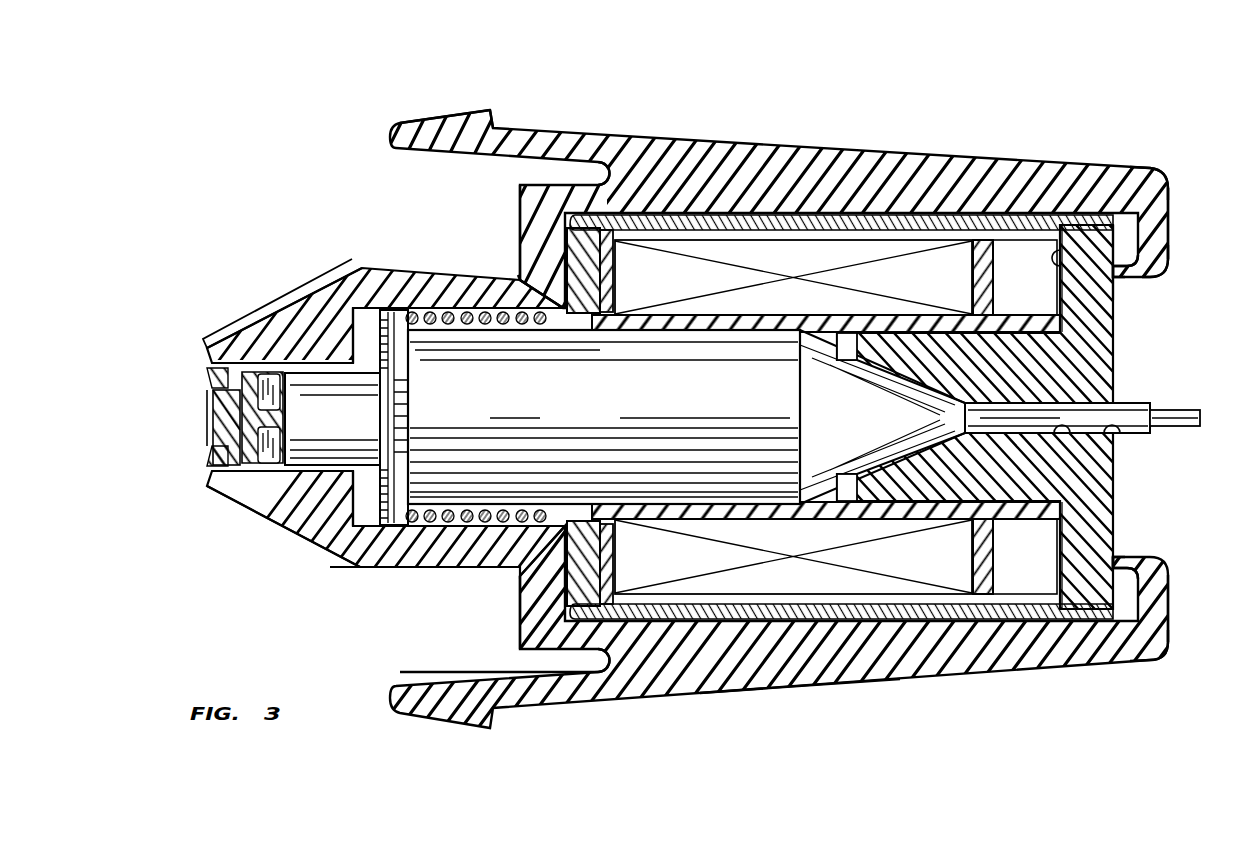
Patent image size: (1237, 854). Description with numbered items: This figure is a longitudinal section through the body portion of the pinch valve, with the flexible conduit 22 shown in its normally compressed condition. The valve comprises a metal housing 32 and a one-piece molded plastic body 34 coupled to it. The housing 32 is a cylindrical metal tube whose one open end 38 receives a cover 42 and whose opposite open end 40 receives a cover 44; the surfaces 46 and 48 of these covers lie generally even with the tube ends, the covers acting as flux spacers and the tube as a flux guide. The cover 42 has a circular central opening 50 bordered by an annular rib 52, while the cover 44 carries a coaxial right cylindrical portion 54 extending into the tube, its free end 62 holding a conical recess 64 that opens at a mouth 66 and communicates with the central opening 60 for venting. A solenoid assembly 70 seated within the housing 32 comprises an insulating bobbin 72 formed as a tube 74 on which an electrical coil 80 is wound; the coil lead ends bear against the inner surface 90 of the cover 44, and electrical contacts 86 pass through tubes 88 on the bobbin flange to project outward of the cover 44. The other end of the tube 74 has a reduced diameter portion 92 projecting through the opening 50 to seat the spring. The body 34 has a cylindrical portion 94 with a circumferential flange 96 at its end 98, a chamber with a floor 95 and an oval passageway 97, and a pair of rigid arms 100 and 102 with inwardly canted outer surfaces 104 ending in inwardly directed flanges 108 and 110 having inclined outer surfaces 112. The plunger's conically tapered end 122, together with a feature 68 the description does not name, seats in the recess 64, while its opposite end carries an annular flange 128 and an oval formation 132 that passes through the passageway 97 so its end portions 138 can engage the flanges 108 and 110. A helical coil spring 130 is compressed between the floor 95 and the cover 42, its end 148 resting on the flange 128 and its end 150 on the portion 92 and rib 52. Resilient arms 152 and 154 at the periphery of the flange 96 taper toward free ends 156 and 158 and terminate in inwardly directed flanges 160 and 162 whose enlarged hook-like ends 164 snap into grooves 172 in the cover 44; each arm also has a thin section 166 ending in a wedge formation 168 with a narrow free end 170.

The resilient arm 152 is at (757, 150).
The resilient arm 154 is at (673, 697).
The narrow free end 170 is at (388, 132).
The wedge formation 168 is at (497, 118).
The thin section 166 is at (603, 172).
The free end 156 is at (1120, 168).
The open end 40 is at (1168, 220).
The inwardly directed flange 160 is at (1168, 258).
The hook-like end 164 is at (1138, 274).
The inwardly directed flange 162 is at (1168, 600).
The free end 158 is at (1117, 661).
The groove 172 is at (1120, 557).
The open end 38 is at (520, 187).
The cover 42 is at (530, 270).
The end 98 is at (517, 268).
The surface 46 is at (520, 590).
The circumferential flange 96 is at (520, 636).
The body 34 is at (787, 669).
The surface 48 is at (1085, 300).
The right cylindrical portion 54 is at (1032, 352).
The cover 44 is at (1113, 290).
The inner surface 90 is at (1058, 258).
The electrical coil 80 is at (878, 222).
The housing 32 is at (960, 616).
The solenoid assembly 70 is at (822, 255).
The bobbin 72 is at (733, 523).
The free end 62 is at (830, 323).
The tube 74 is at (817, 503).
The annular raised portion 52 is at (590, 318).
The rigid arm 100 is at (278, 315).
The rigid arm 102 is at (273, 520).
The outer surface 104 is at (247, 315).
The end portion 138 is at (253, 470).
The floor 95 is at (327, 503).
The second annular flange 128 is at (345, 565).
The helical coil spring 130 is at (402, 560).
The end 148 is at (485, 560).
The passageway 97 is at (322, 316).
The flange 108 is at (213, 380).
The outer surface 112 is at (205, 365).
The flange 110 is at (207, 470).
The flexible conduit 22 is at (207, 424).
The formation 132 is at (340, 410).
The end 150 is at (397, 312).
The reduced diameter portion 92 is at (545, 316).
The cylindrical portion 94 is at (370, 560).
The central opening 50 is at (593, 325).
The conical socket 64 is at (877, 353).
The inner cone 68 is at (877, 417).
The tapered end 122 is at (893, 400).
The mouth 66 is at (857, 473).
The tube 88 is at (1130, 405).
The electrical contact 86 is at (1198, 426).
The central opening 60 is at (1068, 428).